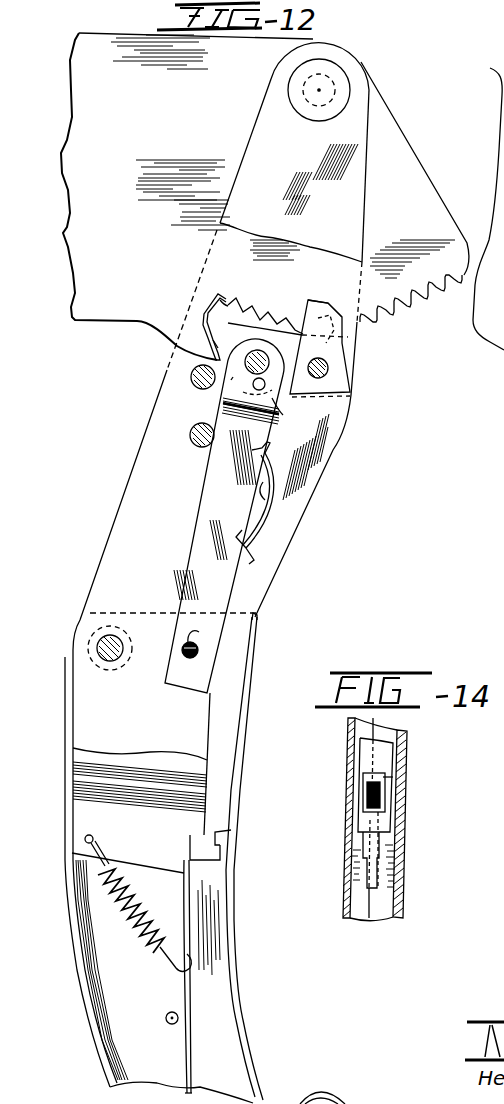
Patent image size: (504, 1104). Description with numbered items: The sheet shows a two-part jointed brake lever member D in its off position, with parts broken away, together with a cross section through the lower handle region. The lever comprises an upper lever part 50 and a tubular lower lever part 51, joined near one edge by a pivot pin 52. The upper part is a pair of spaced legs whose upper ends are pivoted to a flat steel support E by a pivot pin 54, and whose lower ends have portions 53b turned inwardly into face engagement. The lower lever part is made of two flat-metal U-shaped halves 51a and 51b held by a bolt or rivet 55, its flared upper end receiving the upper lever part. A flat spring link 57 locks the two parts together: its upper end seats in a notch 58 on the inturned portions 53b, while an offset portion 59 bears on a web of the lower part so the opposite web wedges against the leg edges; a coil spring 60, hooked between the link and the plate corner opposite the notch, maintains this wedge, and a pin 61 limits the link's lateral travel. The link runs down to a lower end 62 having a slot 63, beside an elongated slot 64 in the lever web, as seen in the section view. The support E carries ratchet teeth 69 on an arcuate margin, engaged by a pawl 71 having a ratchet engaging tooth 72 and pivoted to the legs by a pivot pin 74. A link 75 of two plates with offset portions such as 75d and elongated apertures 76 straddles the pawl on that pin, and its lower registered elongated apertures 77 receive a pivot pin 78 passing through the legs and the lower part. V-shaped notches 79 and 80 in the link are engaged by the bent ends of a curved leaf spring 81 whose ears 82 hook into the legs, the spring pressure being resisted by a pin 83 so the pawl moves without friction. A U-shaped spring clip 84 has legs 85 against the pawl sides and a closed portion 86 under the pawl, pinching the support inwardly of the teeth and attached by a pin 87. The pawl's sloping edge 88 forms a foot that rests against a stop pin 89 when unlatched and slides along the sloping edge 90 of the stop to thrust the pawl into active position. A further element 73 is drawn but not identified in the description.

In FIG. 12, the upper lever part 50 is at (131, 483).
In FIG. 12, the lower lever part 51 is at (242, 788).
In FIG. 12, the U-shaped half 51a is at (187, 976).
In FIG. 14, the U-shaped half 51a is at (348, 812).
In FIG. 12, the U-shaped half 51b is at (236, 918).
In FIG. 14, the U-shaped half 51b is at (407, 801).
In FIG. 12, the pivot pin 52 is at (98, 633).
In FIG. 12, the inturned portions 53b is at (90, 812).
In FIG. 12, the pivot pin 54 is at (348, 76).
In FIG. 12, the bolt or rivet 55 is at (70, 889).
In FIG. 12, the flat spring link 57 is at (191, 1068).
In FIG. 12, the notch 58 is at (190, 848).
In FIG. 12, the offset portion 59 is at (231, 830).
In FIG. 12, the coil spring 60 is at (125, 923).
In FIG. 12, the pin 61 is at (166, 1021).
In FIG. 14, the lower end of link 62 is at (388, 760).
In FIG. 14, the slot 63 is at (385, 778).
In FIG. 14, the elongated slot 64 is at (379, 842).
In FIG. 12, the ratchet teeth 69 is at (407, 314).
In FIG. 12, the pawl 71 is at (252, 321).
In FIG. 12, the ratchet engaging tooth 72 is at (223, 300).
In FIG. 12, the lever 73 is at (211, 320).
In FIG. 12, the pivot pin 74 is at (267, 357).
In FIG. 12, the link 75 is at (198, 509).
In FIG. 12, the offset portion 75d is at (233, 377).
In FIG. 12, the elongated apertures 76 is at (261, 413).
In FIG. 12, the registered elongated apertures 77 is at (202, 631).
In FIG. 12, the pivot pin 78 is at (183, 656).
In FIG. 12, the V-shaped notch 79 is at (252, 450).
In FIG. 12, the V-shaped notch 80 is at (241, 534).
In FIG. 12, the leaf spring 81 is at (258, 540).
In FIG. 12, the laterally extending ears 82 is at (270, 483).
In FIG. 12, the pin 83 is at (190, 436).
In FIG. 12, the spring clip 84 is at (341, 339).
In FIG. 12, the legs 85 is at (327, 308).
In FIG. 12, the closed portion 86 is at (330, 405).
In FIG. 12, the pin 87 is at (316, 377).
In FIG. 12, the sloping edge 88 is at (226, 364).
In FIG. 12, the pin 89 is at (190, 377).
In FIG. 12, the sloping edge 90 is at (213, 342).
In FIG. 12, the support E is at (404, 152).
In FIG. 12, the two-part jointed lever member D is at (320, 477).